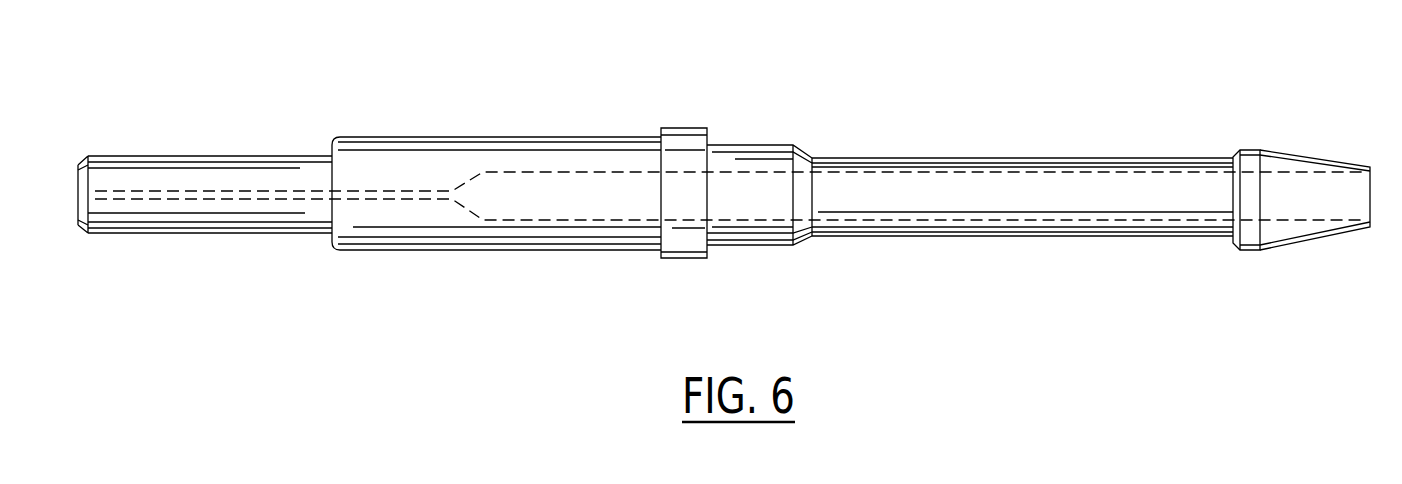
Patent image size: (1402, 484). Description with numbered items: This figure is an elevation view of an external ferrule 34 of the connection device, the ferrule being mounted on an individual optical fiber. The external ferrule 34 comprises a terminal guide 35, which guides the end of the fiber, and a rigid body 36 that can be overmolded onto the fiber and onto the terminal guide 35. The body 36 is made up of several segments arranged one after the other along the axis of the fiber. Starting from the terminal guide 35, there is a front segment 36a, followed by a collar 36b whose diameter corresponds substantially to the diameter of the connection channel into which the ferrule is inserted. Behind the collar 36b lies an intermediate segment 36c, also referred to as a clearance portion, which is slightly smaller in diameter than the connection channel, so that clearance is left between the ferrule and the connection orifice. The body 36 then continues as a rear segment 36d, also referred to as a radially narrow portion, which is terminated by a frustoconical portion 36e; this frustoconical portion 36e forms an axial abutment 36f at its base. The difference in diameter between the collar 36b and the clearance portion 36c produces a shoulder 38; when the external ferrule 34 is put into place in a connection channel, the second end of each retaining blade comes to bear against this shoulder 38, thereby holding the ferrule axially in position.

The external ferrule 34 is at (452, 137).
The terminal guide 35 is at (180, 178).
The rigid body 36 is at (570, 120).
The front segment 36a is at (457, 230).
The collar 36b is at (684, 150).
The intermediate segment 36c is at (727, 232).
The rear segment 36d is at (908, 187).
The frustoconical portion 36e is at (1323, 147).
The axial abutment 36f is at (1237, 185).
The shoulder 38 is at (713, 160).